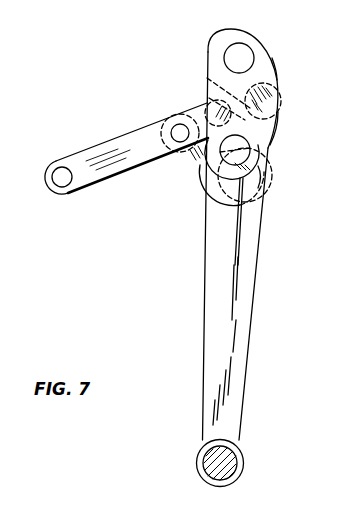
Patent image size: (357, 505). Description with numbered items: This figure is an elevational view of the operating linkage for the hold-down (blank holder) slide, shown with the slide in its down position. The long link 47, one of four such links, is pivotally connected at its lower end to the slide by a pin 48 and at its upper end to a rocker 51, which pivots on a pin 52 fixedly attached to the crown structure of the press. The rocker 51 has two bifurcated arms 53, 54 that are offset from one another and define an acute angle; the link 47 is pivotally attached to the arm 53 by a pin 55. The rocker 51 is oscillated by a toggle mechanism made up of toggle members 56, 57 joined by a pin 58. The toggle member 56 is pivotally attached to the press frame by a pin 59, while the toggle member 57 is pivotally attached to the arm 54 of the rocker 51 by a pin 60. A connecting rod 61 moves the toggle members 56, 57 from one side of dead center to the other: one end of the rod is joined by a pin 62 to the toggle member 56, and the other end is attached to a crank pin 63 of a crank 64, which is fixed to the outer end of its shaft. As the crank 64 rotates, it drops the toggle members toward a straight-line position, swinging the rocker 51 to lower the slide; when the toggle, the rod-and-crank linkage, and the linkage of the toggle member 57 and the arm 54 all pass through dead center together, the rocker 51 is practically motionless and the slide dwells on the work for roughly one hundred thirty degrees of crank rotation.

The link 47 is at (248, 327).
The pin 48 is at (232, 465).
The rocker 51 is at (222, 40).
The pin 52 is at (251, 50).
The arm 53 is at (275, 125).
The arm 54 is at (270, 62).
The pin 55 is at (250, 150).
The toggle member 56 is at (133, 140).
The toggle member 57 is at (207, 74).
The pin 58 is at (208, 101).
The pin 59 is at (53, 173).
The pin 60 is at (283, 98).
The connecting rod 61 is at (193, 158).
The pin 62 is at (167, 127).
The crank pin 63 is at (265, 186).
The crank 64 is at (198, 195).